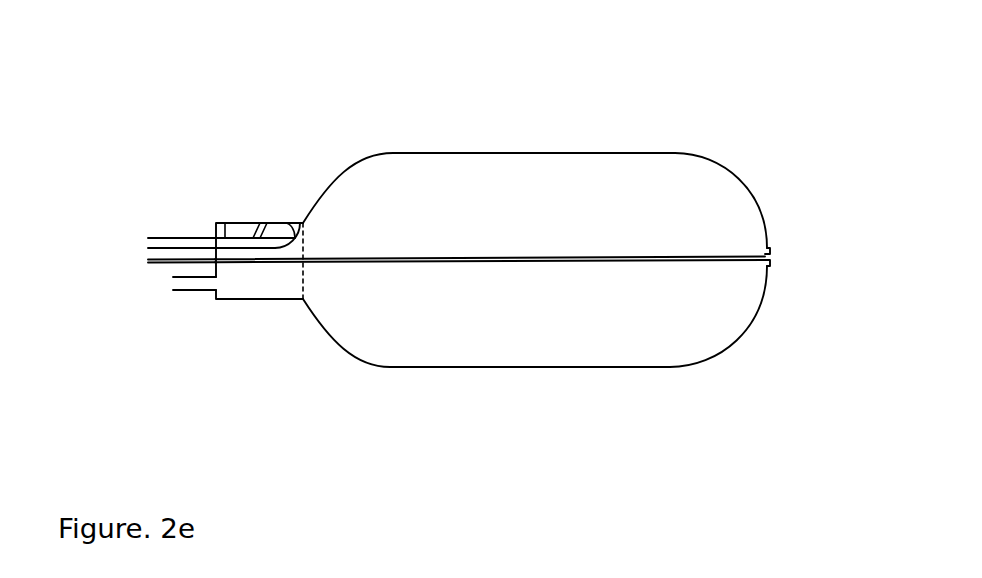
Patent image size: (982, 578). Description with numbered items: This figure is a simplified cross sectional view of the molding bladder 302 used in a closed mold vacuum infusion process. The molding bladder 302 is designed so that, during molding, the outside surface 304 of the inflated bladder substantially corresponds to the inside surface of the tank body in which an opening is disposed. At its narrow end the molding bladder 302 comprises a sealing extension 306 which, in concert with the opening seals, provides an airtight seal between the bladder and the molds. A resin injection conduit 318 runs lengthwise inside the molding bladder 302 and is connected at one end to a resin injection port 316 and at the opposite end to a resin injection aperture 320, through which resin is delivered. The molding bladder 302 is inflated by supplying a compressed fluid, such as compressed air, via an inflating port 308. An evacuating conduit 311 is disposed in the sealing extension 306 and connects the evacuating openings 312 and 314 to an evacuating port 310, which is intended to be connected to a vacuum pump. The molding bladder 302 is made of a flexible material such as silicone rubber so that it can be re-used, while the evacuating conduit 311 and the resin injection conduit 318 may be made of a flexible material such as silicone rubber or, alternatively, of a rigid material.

The molding bladder 302 is at (645, 128).
The outside surface 304 is at (437, 152).
The sealing extension 306 is at (274, 291).
The inflating port 308 is at (180, 285).
The evacuating port 310 is at (148, 236).
The evacuating conduit 311 is at (222, 222).
The evacuating opening 312 is at (257, 222).
The evacuating opening 314 is at (290, 222).
The resin injection port 316 is at (152, 265).
The resin injection conduit 318 is at (406, 262).
The resin injection aperture 320 is at (770, 258).